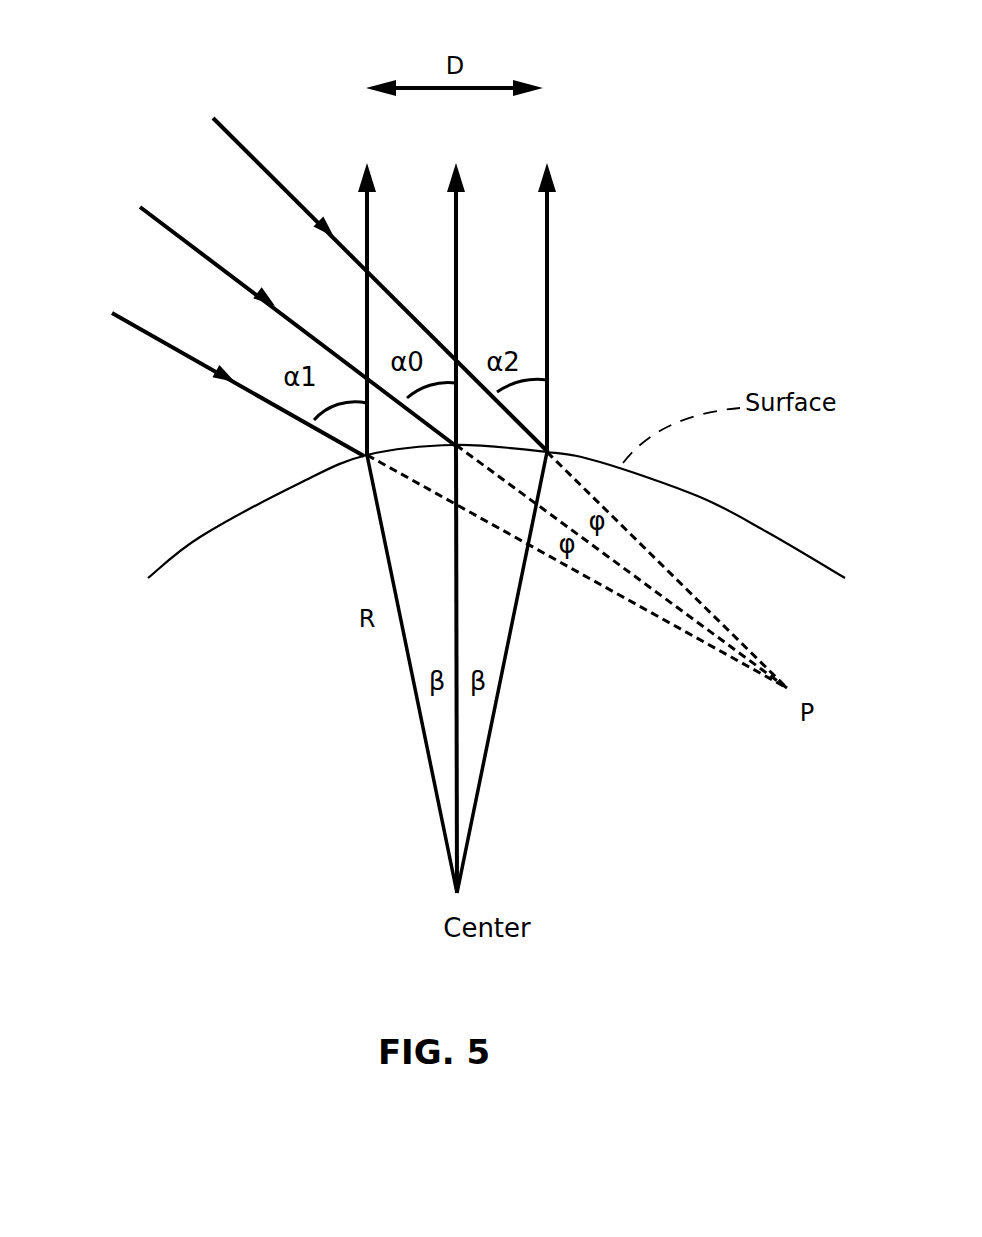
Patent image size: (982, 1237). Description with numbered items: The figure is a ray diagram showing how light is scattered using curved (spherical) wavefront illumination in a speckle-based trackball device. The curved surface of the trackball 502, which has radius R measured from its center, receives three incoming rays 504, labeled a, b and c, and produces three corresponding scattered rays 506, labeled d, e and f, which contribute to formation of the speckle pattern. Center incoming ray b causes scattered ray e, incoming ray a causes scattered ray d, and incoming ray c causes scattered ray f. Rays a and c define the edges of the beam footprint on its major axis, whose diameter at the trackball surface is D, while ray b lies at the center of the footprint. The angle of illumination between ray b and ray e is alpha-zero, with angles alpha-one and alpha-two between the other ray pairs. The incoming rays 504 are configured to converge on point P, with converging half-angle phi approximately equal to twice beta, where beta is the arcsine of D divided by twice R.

The trackball 502 is at (475, 553).
The incoming rays 504 is at (310, 287).
The scattered rays 506 is at (469, 295).